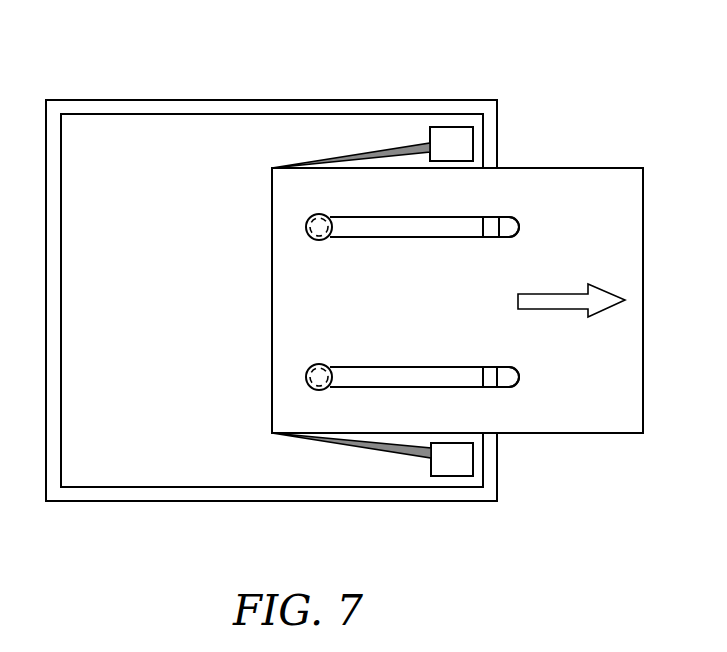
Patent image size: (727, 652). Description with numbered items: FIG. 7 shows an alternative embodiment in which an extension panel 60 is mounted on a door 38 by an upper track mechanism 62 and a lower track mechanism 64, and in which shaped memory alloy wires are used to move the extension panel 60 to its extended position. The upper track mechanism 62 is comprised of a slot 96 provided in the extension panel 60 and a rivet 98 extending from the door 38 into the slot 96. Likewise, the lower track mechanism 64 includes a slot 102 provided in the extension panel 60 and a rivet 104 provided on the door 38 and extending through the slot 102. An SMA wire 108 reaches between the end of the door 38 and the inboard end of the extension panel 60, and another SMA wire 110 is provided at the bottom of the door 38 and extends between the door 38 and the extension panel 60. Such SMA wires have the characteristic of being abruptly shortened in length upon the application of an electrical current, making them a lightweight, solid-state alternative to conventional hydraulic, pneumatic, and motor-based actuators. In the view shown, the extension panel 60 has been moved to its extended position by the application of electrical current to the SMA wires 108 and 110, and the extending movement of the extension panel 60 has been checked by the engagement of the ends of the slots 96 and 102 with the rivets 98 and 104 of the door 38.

The door 38 is at (138, 152).
The extension panel 60 is at (597, 192).
The upper track mechanism 62 is at (432, 225).
The lower track mechanism 64 is at (373, 378).
The slot 96 is at (462, 237).
The rivet 98 is at (318, 214).
The slot 102 is at (408, 368).
The rivet 104 is at (320, 390).
The shaped memory alloy (SMA) wire 108 is at (362, 152).
The SMA wire 110 is at (363, 450).